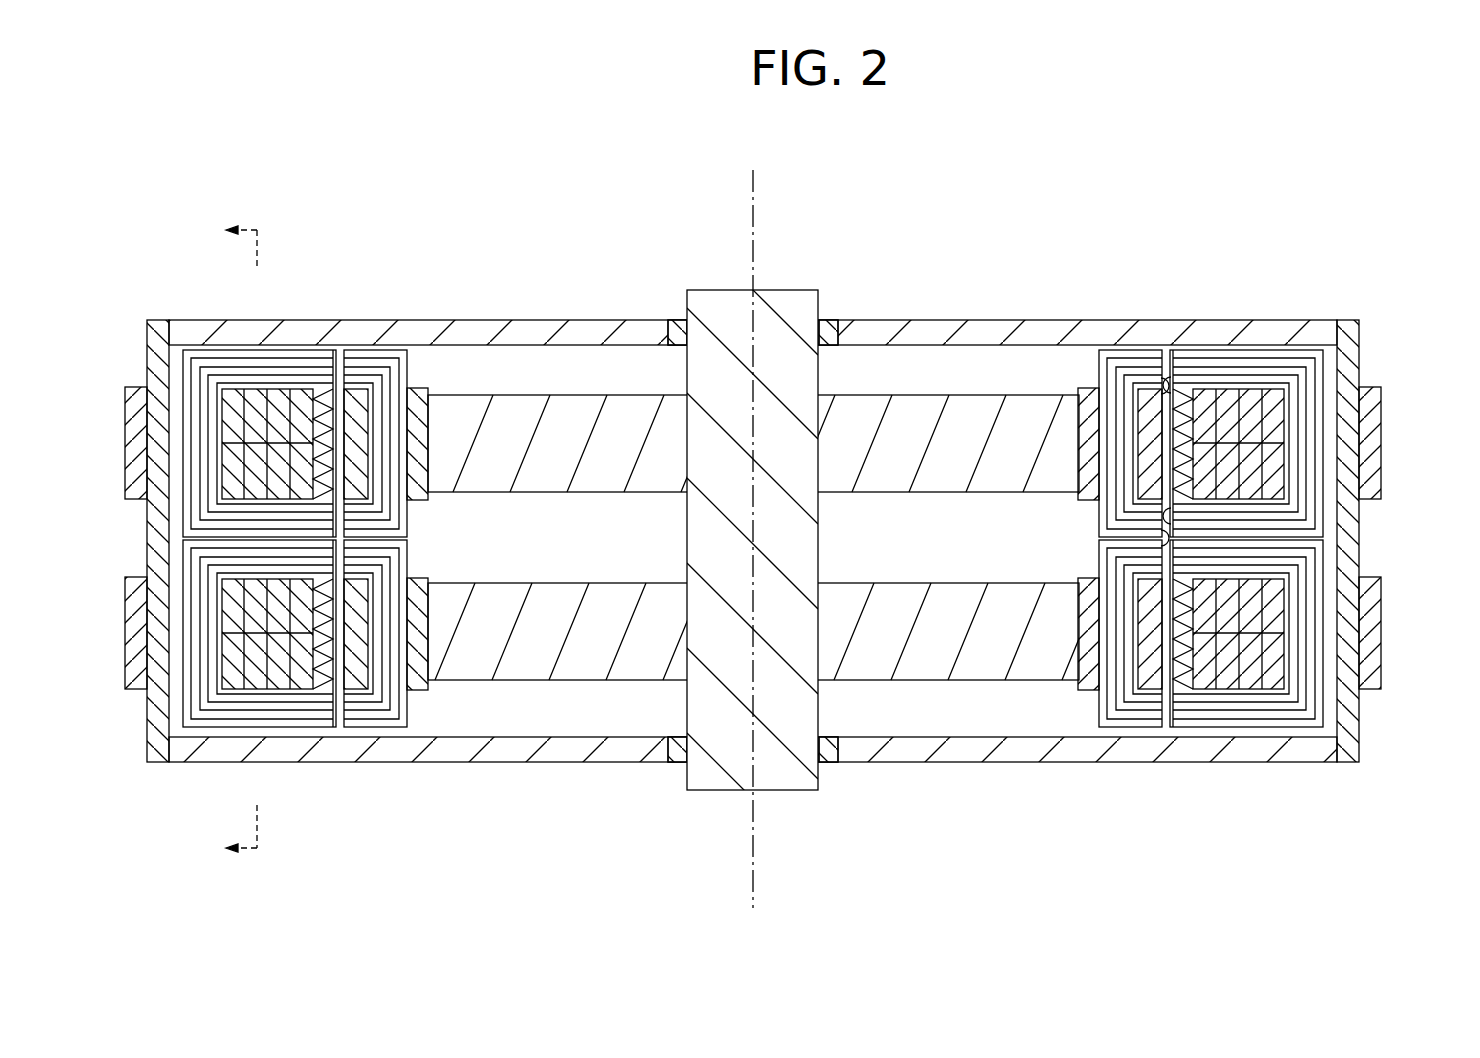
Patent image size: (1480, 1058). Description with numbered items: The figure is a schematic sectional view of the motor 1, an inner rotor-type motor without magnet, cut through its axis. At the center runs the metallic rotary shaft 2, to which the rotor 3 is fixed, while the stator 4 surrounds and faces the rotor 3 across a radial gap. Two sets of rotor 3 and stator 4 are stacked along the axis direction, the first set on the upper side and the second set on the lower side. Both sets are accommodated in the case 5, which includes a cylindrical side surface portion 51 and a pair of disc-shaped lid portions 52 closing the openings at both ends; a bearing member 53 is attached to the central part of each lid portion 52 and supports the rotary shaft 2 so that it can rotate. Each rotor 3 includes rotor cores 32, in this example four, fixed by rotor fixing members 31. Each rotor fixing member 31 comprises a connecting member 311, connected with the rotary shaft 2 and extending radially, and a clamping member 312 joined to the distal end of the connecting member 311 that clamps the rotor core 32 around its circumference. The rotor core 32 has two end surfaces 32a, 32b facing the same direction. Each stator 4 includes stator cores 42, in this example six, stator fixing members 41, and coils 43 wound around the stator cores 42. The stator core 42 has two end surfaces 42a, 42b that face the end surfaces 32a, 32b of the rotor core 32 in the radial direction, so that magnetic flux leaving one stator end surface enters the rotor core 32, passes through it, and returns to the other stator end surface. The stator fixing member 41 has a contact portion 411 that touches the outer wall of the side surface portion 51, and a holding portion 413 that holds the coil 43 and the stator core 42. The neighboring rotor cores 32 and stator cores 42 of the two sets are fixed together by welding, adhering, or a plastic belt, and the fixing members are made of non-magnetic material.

The motor 1 is at (958, 205).
The rotary shaft 2 is at (780, 312).
The rotor 3 is at (1138, 346).
The rotor fixing member 31 is at (918, 396).
The connecting member 311 is at (958, 415).
The clamping member 312 is at (1092, 402).
The rotor core 32 is at (1091, 372).
The end surface 32a is at (1166, 378).
The end surface 32b is at (1160, 521).
The stator 4 is at (1240, 345).
The stator fixing member 41 is at (1381, 447).
The contact portion 411 is at (1370, 402).
The holding portion 413 is at (1250, 458).
The stator core 42 is at (1296, 345).
The end surface 42a is at (1172, 386).
The end surface 42b is at (1172, 516).
The coil 43 is at (1253, 416).
The case 5 is at (557, 321).
The side surface portion 51 is at (157, 550).
The lid portion 52 is at (456, 320).
The bearing member 53 is at (680, 322).